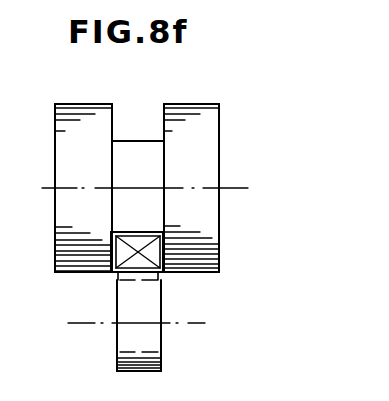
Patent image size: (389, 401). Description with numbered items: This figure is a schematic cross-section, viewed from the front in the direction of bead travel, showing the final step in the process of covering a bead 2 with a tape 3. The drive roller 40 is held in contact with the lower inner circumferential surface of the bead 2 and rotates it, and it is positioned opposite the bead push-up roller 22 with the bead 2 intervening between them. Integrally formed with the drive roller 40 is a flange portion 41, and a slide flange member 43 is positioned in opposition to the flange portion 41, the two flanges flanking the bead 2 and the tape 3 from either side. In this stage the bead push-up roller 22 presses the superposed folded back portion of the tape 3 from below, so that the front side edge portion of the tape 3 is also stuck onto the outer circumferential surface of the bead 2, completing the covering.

The flange portion 41 is at (89, 122).
The slide flange member 43 is at (192, 128).
The drive roller 40 is at (140, 155).
The bead 2 is at (133, 258).
The tape 3 is at (145, 275).
The bead push-up roller 22 is at (161, 345).